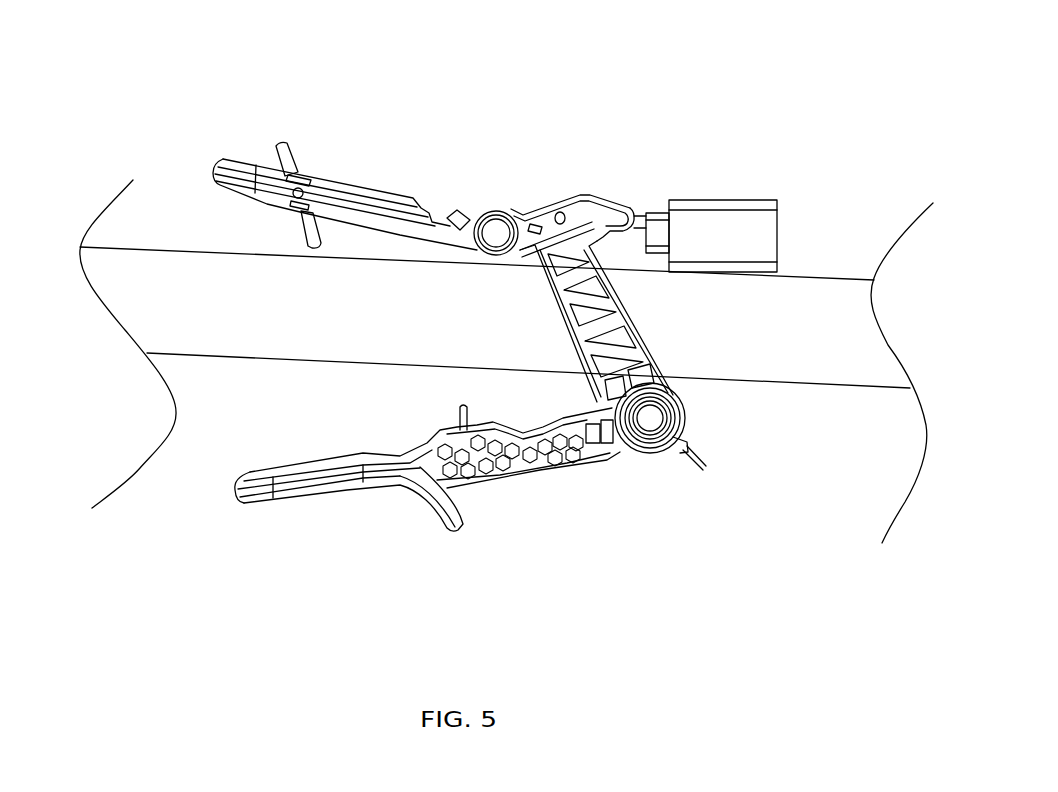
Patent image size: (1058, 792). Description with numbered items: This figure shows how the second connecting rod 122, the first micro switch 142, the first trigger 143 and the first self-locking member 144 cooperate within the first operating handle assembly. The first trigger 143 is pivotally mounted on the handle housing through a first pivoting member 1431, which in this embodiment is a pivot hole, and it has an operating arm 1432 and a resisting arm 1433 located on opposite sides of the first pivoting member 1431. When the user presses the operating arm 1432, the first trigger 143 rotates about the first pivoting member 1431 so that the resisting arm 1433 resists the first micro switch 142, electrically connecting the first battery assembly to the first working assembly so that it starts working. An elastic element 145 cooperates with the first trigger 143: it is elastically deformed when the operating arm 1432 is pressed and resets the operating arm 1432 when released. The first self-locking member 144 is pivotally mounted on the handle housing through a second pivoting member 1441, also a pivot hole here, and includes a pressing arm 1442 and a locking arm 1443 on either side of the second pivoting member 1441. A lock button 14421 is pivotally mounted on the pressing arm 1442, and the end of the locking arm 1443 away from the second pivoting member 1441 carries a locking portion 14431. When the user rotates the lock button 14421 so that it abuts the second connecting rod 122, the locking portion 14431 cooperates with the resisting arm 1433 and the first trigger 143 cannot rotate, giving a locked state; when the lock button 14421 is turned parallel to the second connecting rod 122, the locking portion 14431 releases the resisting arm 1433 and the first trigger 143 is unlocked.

The second connecting rod 122 is at (253, 317).
The first micro switch 142 is at (723, 235).
The first trigger 143 is at (608, 456).
The first self-locking member 144 is at (473, 207).
The elastic element 145 is at (674, 423).
The first pivoting member 1431 is at (650, 418).
The operating arm 1432 is at (483, 482).
The resisting arm 1433 is at (612, 306).
The second pivoting member 1441 is at (500, 228).
The pressing arm 1442 is at (351, 197).
The locking arm 1443 is at (603, 205).
The lock button 14421 is at (278, 147).
The locking portion 14431 is at (620, 220).